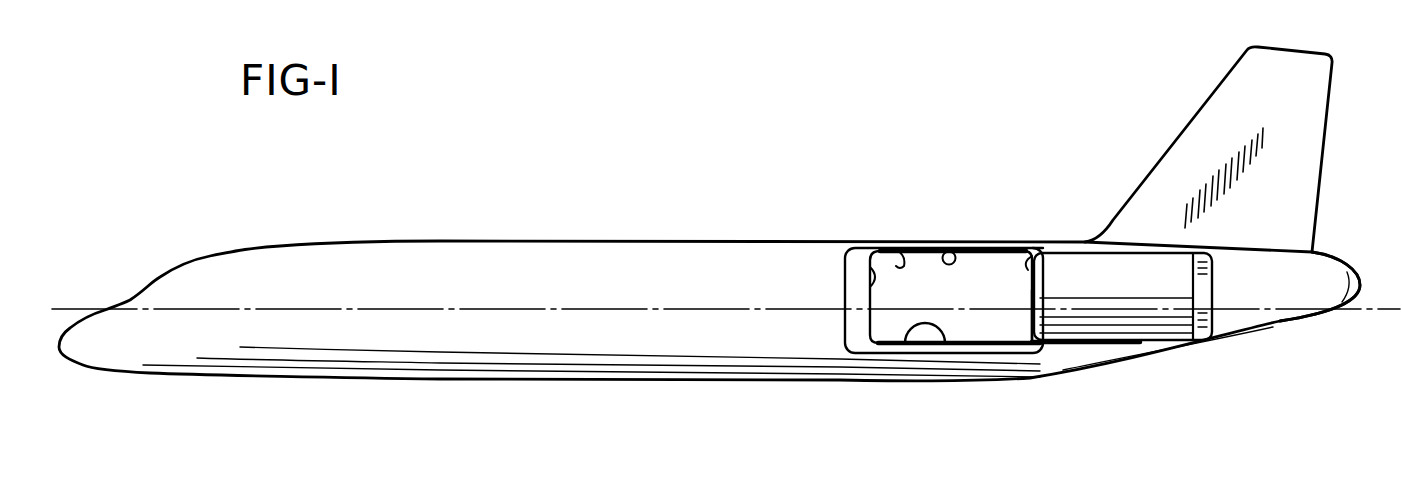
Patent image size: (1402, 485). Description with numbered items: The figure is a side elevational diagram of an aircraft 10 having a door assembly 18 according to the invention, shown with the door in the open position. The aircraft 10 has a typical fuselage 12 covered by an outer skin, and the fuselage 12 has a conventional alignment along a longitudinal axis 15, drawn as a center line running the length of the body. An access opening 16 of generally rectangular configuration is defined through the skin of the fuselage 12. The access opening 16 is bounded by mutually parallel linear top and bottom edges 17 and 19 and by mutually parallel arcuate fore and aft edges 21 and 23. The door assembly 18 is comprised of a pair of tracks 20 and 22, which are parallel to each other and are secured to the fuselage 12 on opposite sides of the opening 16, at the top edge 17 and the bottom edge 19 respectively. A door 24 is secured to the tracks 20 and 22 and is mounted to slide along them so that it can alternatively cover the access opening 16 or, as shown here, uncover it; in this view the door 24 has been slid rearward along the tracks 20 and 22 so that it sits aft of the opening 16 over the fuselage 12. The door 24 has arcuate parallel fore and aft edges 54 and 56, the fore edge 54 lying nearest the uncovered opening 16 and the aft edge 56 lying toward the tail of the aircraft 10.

The aircraft 10 is at (300, 237).
The fuselage 12 is at (642, 234).
The longitudinal axis 15 is at (68, 309).
The access opening 16 is at (895, 256).
The top edge 17 is at (950, 250).
The door assembly 18 is at (1044, 243).
The bottom edge 19 is at (940, 343).
The track 20 is at (900, 268).
The fore edge 21 is at (845, 262).
The track 22 is at (920, 343).
The aft edge 23 is at (1026, 264).
The door 24 is at (1119, 276).
The fore edge 54 is at (1031, 298).
The aft edge 56 is at (1212, 282).